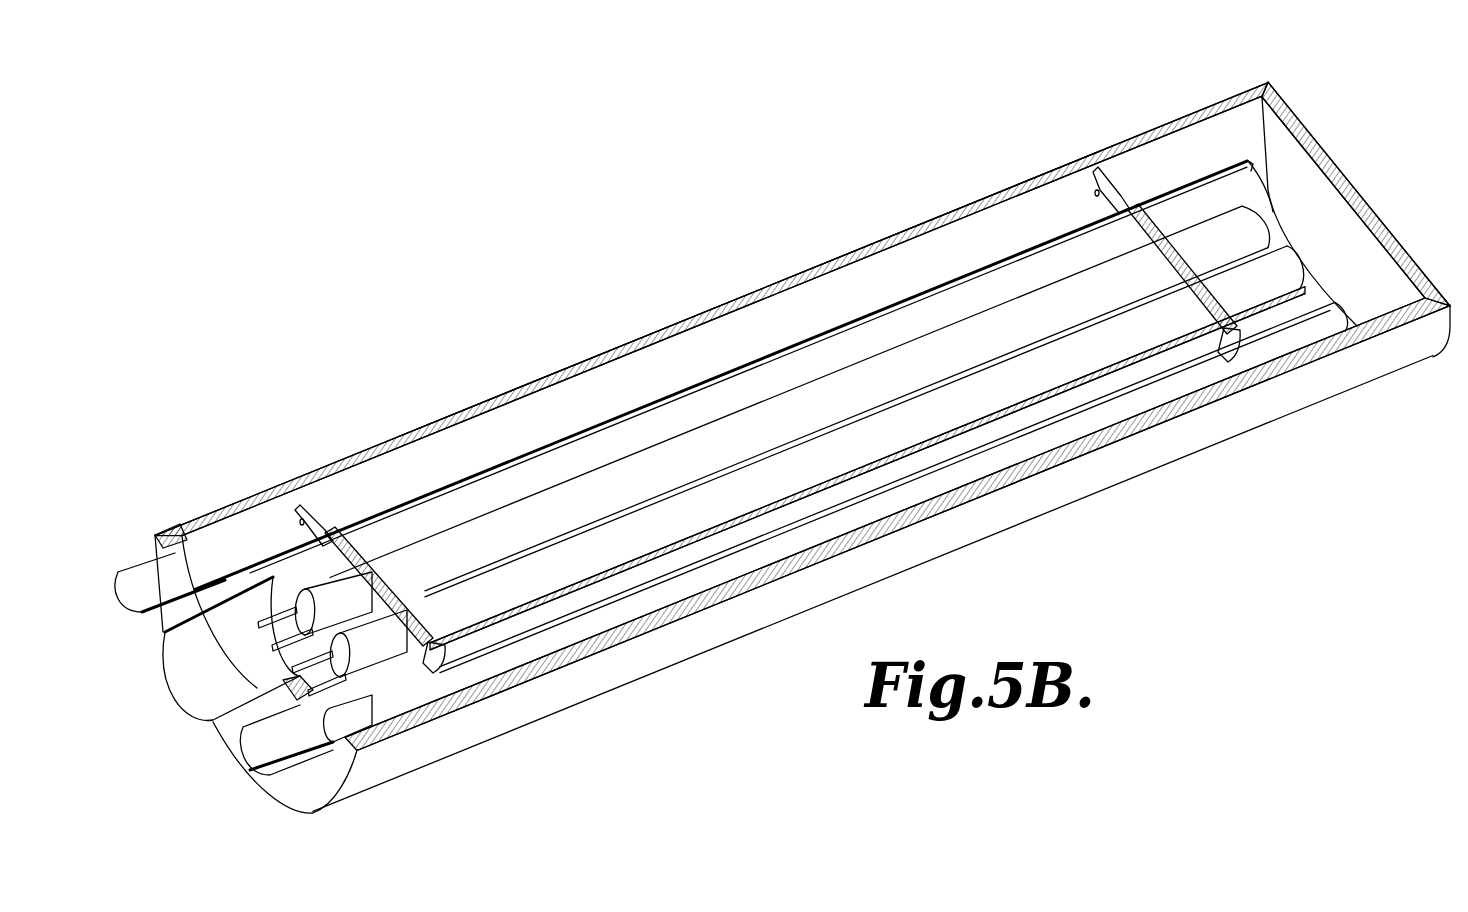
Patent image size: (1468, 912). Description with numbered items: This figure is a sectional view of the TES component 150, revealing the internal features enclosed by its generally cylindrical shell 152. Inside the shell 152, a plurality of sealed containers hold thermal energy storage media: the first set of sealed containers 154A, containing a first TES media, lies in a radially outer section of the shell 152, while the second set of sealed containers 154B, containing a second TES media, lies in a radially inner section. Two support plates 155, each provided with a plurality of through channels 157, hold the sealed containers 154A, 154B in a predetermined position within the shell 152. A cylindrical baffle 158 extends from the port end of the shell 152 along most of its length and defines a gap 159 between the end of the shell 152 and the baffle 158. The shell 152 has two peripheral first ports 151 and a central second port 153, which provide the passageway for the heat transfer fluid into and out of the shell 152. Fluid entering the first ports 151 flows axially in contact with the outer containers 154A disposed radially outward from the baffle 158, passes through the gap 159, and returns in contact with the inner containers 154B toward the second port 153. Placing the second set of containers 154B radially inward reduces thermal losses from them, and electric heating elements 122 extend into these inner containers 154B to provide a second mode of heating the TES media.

The TES component 150 is at (1388, 97).
The first ports 151 is at (137, 562).
The shell 152 is at (774, 279).
The second port 153 is at (197, 683).
The first set of sealed containers 154A is at (913, 497).
The second set of sealed containers 154B is at (980, 325).
The support plates 155 is at (1118, 197).
The through channels 157 is at (1093, 195).
The cylindrical baffle 158 is at (456, 508).
The gap 159 is at (1277, 207).
The heating elements 122 is at (292, 610).